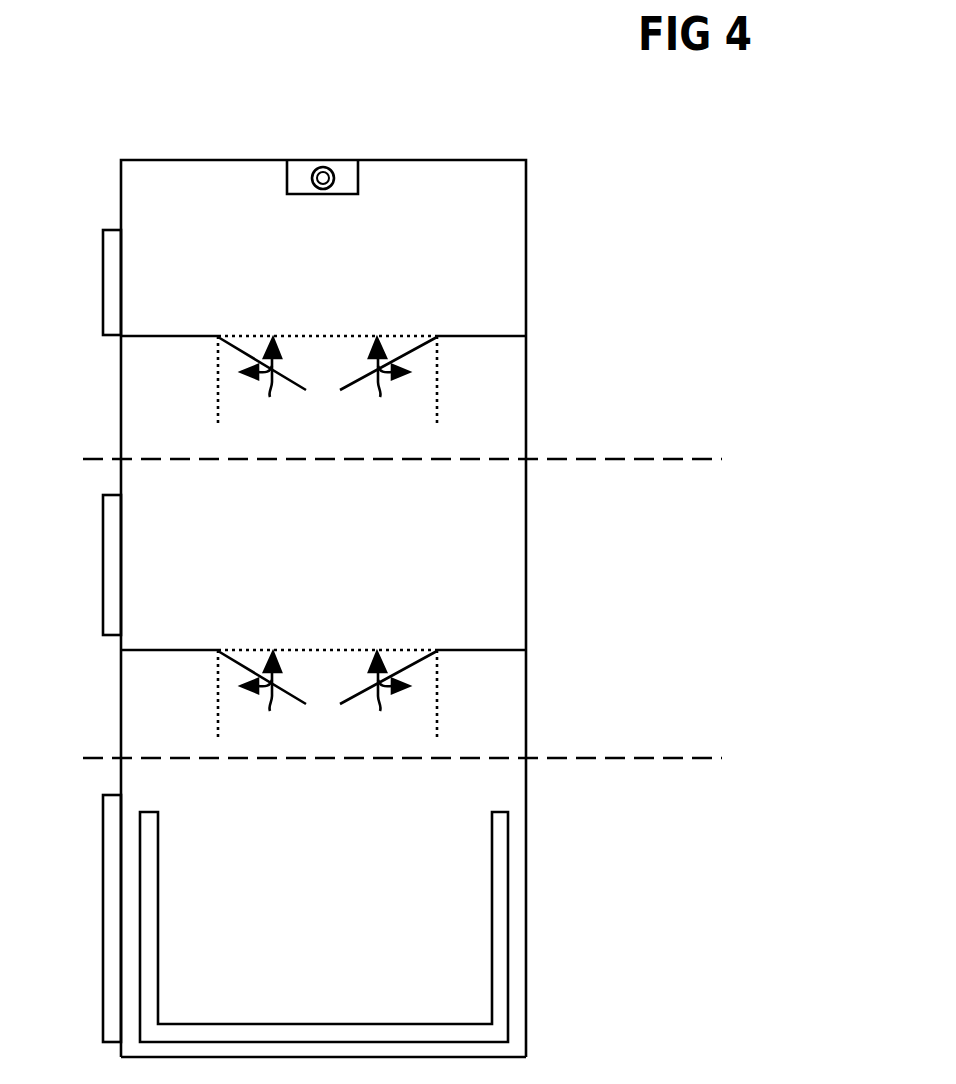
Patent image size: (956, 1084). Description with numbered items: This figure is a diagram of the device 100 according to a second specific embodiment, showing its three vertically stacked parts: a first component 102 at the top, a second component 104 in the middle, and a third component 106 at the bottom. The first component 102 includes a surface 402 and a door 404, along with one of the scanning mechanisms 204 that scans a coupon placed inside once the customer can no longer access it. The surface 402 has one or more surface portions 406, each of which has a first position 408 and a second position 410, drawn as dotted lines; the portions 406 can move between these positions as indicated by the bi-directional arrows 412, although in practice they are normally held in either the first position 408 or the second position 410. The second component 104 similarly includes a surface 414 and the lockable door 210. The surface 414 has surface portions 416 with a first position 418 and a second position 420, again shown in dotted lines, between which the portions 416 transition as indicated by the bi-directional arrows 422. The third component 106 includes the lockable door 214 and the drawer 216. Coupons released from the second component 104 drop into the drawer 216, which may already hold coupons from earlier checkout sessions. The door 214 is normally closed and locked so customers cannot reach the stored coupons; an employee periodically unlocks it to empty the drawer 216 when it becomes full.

The device 100 is at (323, 593).
The first component 102 is at (402, 363).
The second component 104 is at (402, 662).
The third component 106 is at (412, 962).
The scanning mechanism 204 is at (331, 185).
The lockable door 210 is at (102, 548).
The lockable door 214 is at (102, 913).
The drawer 216 is at (233, 1023).
The surface 402 is at (503, 334).
The door 404 is at (102, 267).
The surface portions 406 is at (353, 381).
The first position 408 is at (292, 334).
The second position 410 is at (217, 377).
The bi-directional arrows 412 is at (325, 377).
The surface 414 is at (502, 649).
The surface portions 416 is at (353, 695).
The first position 418 is at (290, 649).
The second position 420 is at (217, 692).
The bi-directional arrows 422 is at (325, 691).